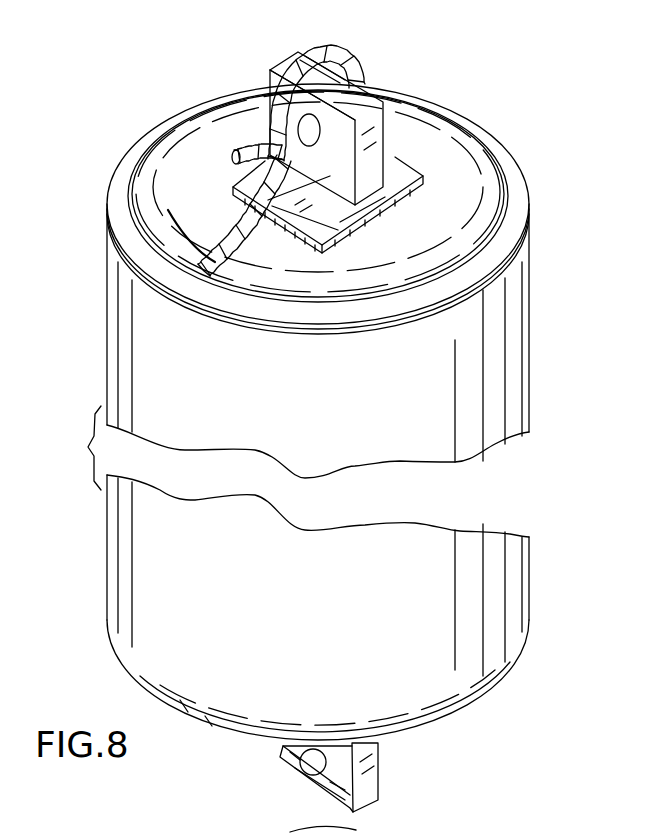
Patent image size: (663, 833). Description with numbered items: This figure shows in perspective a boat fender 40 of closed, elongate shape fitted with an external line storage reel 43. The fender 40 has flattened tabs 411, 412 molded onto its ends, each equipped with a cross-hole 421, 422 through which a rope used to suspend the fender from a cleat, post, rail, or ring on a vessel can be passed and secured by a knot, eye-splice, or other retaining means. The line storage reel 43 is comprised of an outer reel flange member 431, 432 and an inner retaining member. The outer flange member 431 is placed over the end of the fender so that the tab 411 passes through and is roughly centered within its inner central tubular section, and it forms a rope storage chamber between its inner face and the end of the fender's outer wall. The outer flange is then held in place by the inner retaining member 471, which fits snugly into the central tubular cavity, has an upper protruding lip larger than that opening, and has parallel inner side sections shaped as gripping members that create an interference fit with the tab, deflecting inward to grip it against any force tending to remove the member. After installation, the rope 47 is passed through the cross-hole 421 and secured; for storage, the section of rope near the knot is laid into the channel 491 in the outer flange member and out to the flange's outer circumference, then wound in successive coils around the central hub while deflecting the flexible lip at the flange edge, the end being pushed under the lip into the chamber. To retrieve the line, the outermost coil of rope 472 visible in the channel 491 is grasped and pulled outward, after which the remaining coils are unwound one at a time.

The boat fender 40 is at (533, 357).
The line storage reel 43 is at (480, 174).
The outer reel flange member 431 is at (468, 214).
The outer reel flange member 432 is at (468, 705).
The flattened tab 411 is at (383, 122).
The flattened tab 412 is at (380, 784).
The cross-hole 421 is at (351, 183).
The cross-hole 422 is at (284, 749).
The rope 47 is at (343, 50).
The inner retaining member 471 is at (272, 152).
The outermost coil of rope 472 is at (205, 275).
The channel 491 is at (226, 226).